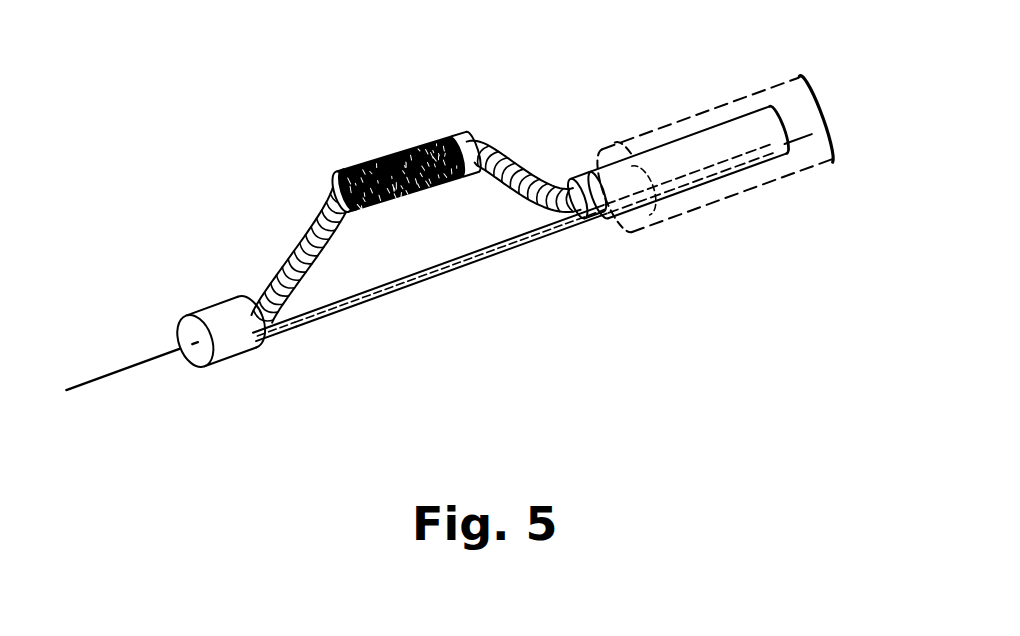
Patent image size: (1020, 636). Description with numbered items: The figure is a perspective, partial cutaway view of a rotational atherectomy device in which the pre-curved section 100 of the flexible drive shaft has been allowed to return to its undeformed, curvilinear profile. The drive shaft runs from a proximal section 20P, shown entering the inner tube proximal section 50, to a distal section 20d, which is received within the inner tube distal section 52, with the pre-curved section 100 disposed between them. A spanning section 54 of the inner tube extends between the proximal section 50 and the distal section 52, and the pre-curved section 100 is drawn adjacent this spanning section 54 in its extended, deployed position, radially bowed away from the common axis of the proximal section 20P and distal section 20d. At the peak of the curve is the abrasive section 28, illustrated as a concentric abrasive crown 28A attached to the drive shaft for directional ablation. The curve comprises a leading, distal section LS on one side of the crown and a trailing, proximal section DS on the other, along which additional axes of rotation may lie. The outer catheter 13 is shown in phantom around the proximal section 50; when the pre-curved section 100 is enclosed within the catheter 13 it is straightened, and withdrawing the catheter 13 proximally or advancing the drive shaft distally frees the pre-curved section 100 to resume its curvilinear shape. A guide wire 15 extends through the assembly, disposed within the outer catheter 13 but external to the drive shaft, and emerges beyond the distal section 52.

The pre-curved section 100 is at (516, 58).
The outer catheter 13 is at (685, 120).
The guide wire 15 is at (148, 365).
The distal section of drive shaft 20d is at (273, 332).
The proximal section of drive shaft 20P is at (607, 212).
The abrasive section 28 is at (367, 158).
The concentric abrasive crown 28A is at (456, 140).
The inner tube proximal section 50 is at (696, 157).
The inner tube distal section 52 is at (204, 316).
The spanning section of inner tube 54 is at (410, 291).
The leading section of pre-curved section LS is at (313, 185).
The trailing section of pre-curved section DS is at (570, 185).